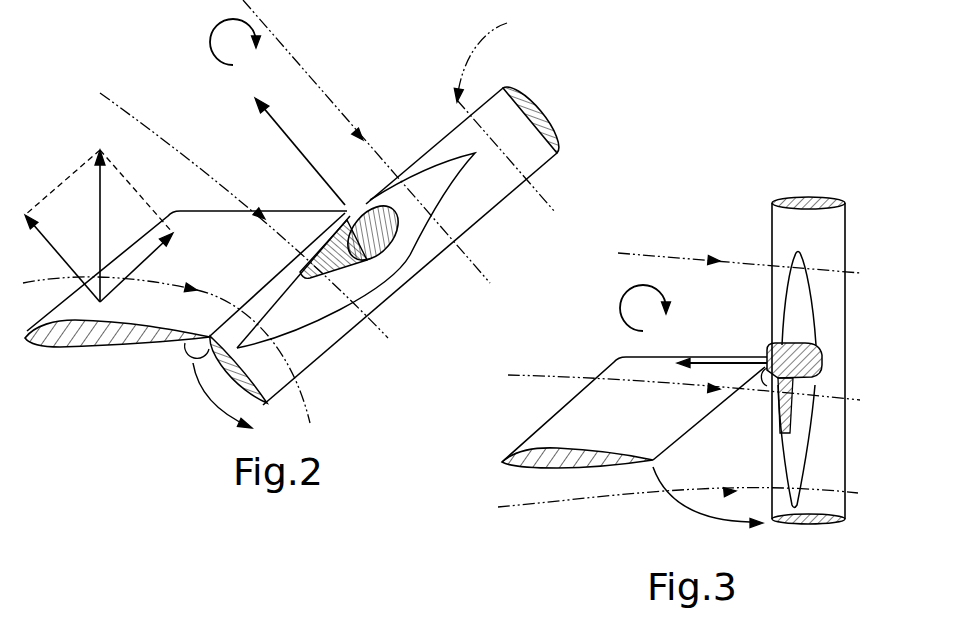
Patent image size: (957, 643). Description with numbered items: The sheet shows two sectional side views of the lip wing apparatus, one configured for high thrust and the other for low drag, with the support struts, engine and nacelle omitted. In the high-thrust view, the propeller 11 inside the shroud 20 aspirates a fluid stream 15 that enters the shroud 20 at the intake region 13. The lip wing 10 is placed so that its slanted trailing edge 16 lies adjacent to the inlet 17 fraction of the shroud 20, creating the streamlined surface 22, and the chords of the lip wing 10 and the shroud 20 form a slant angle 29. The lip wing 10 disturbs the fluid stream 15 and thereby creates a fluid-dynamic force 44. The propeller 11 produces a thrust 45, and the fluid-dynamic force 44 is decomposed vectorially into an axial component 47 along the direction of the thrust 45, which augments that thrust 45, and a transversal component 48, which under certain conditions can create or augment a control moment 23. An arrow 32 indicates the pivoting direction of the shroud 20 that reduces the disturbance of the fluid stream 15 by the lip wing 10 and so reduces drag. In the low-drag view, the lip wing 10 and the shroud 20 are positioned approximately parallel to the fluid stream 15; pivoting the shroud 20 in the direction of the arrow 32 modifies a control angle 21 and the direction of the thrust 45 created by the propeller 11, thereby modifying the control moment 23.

In FIG. 2, the lip wing 10 is at (80, 343).
In FIG. 3, the lip wing 10 is at (555, 462).
In FIG. 2, the propeller 11 is at (437, 177).
In FIG. 3, the propeller 11 is at (797, 260).
In FIG. 2, the intake region 13 is at (150, 91).
In FIG. 2, the fluid stream 15 is at (472, 45).
In FIG. 3, the fluid stream 15 is at (657, 253).
In FIG. 2, the slanted trailing edge 16 is at (243, 307).
In FIG. 2, the inlet 17 is at (255, 310).
In FIG. 2, the shroud 20 is at (481, 221).
In FIG. 3, the shroud 20 is at (802, 525).
In FIG. 3, the control angle 21 is at (762, 395).
In FIG. 2, the streamlined surface 22 is at (210, 323).
In FIG. 2, the control moment 23 is at (208, 35).
In FIG. 3, the control moment 23 is at (622, 305).
In FIG. 2, the slant angle 29 is at (192, 348).
In FIG. 2, the arrow 32 is at (198, 390).
In FIG. 3, the arrow 32 is at (690, 508).
In FIG. 2, the fluid-dynamic force 44 is at (100, 182).
In FIG. 2, the thrust 45 is at (283, 137).
In FIG. 3, the thrust 45 is at (703, 363).
In FIG. 2, the axial component 47 is at (62, 257).
In FIG. 2, the transversal component 48 is at (136, 257).